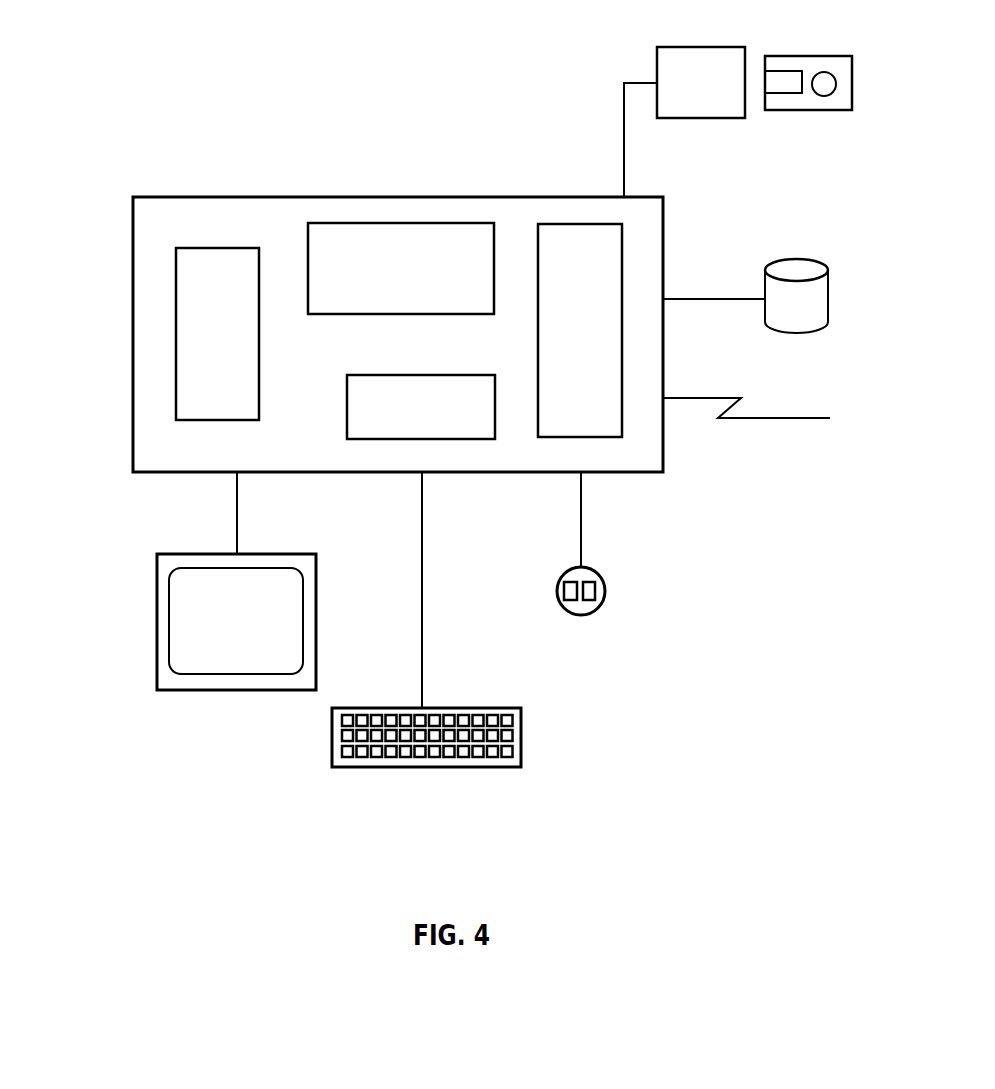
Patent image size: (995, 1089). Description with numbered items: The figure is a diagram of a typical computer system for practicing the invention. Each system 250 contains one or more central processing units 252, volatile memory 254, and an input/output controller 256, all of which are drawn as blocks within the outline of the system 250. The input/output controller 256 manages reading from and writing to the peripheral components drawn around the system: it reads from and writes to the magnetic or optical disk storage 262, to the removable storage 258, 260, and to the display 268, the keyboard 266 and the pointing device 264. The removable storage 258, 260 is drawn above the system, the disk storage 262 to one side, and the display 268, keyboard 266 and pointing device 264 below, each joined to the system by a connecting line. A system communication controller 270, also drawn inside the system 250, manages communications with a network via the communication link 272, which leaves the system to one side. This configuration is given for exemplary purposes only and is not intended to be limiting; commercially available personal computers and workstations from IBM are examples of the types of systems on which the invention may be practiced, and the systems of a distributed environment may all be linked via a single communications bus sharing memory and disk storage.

The system 250 is at (148, 172).
The central processing unit 252 is at (232, 321).
The volatile memory 254 is at (470, 299).
The input/output controller 256 is at (595, 297).
The removable storage 258 is at (714, 95).
The removable storage 260 is at (803, 56).
The magnetic or optical disk storage 262 is at (811, 323).
The pointing device 264 is at (581, 615).
The keyboard 266 is at (422, 767).
The display 268 is at (274, 655).
The system communication controller 270 is at (470, 425).
The communication link 272 is at (785, 418).